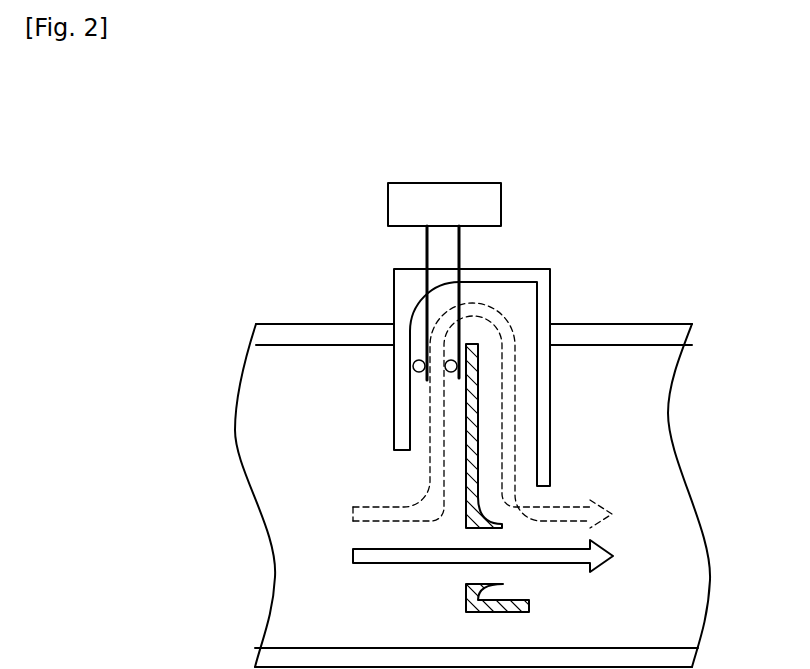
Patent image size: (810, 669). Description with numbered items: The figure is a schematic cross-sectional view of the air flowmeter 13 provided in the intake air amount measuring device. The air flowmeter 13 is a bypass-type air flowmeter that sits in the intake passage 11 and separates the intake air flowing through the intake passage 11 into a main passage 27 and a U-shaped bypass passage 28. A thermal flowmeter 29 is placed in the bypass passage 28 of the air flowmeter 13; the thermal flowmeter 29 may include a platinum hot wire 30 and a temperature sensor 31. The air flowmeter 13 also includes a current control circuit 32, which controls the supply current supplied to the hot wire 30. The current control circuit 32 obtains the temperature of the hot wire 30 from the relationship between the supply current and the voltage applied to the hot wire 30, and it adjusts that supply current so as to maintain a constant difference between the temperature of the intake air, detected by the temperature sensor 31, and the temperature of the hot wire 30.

The intake passage 11 is at (302, 323).
The air flowmeter 13 is at (383, 279).
The main passage 27 is at (571, 565).
The bypass passage 28 is at (516, 405).
The thermal flowmeter 29 is at (384, 388).
The hot wire 30 is at (445, 368).
The temperature sensor 31 is at (413, 366).
The current control circuit 32 is at (501, 205).